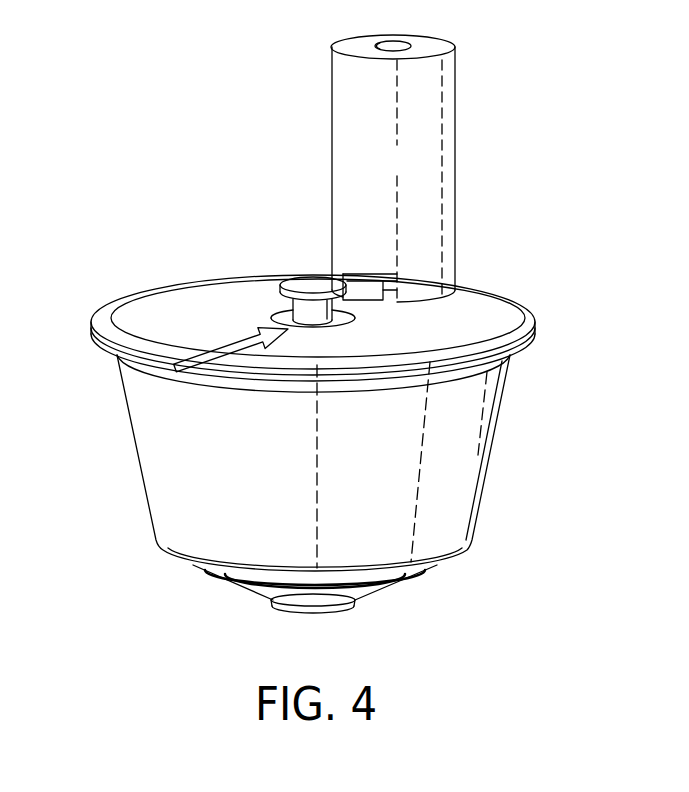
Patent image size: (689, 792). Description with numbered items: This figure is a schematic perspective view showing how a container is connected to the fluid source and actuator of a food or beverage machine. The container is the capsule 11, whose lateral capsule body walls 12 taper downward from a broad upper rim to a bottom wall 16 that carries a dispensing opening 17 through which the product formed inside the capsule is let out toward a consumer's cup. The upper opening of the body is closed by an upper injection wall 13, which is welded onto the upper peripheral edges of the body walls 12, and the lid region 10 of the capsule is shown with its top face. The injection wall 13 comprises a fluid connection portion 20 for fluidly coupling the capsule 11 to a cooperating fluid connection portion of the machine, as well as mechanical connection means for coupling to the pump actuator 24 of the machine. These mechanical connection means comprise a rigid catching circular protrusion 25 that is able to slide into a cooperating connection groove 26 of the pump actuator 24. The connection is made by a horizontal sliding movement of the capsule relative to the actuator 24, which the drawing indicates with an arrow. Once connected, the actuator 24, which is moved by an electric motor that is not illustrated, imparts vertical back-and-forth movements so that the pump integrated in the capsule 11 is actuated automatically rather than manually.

The lid 10 is at (192, 311).
The capsule 11 is at (134, 476).
The capsule body walls 12 is at (490, 449).
The upper injection wall 13 is at (101, 318).
The bottom wall 16 is at (400, 586).
The dispensing opening 17 is at (291, 613).
The fluid connection portion 20 is at (290, 312).
The pump actuator 24 is at (384, 170).
The rigid catching circular protrusion 25 is at (292, 286).
The connection groove 26 is at (345, 274).